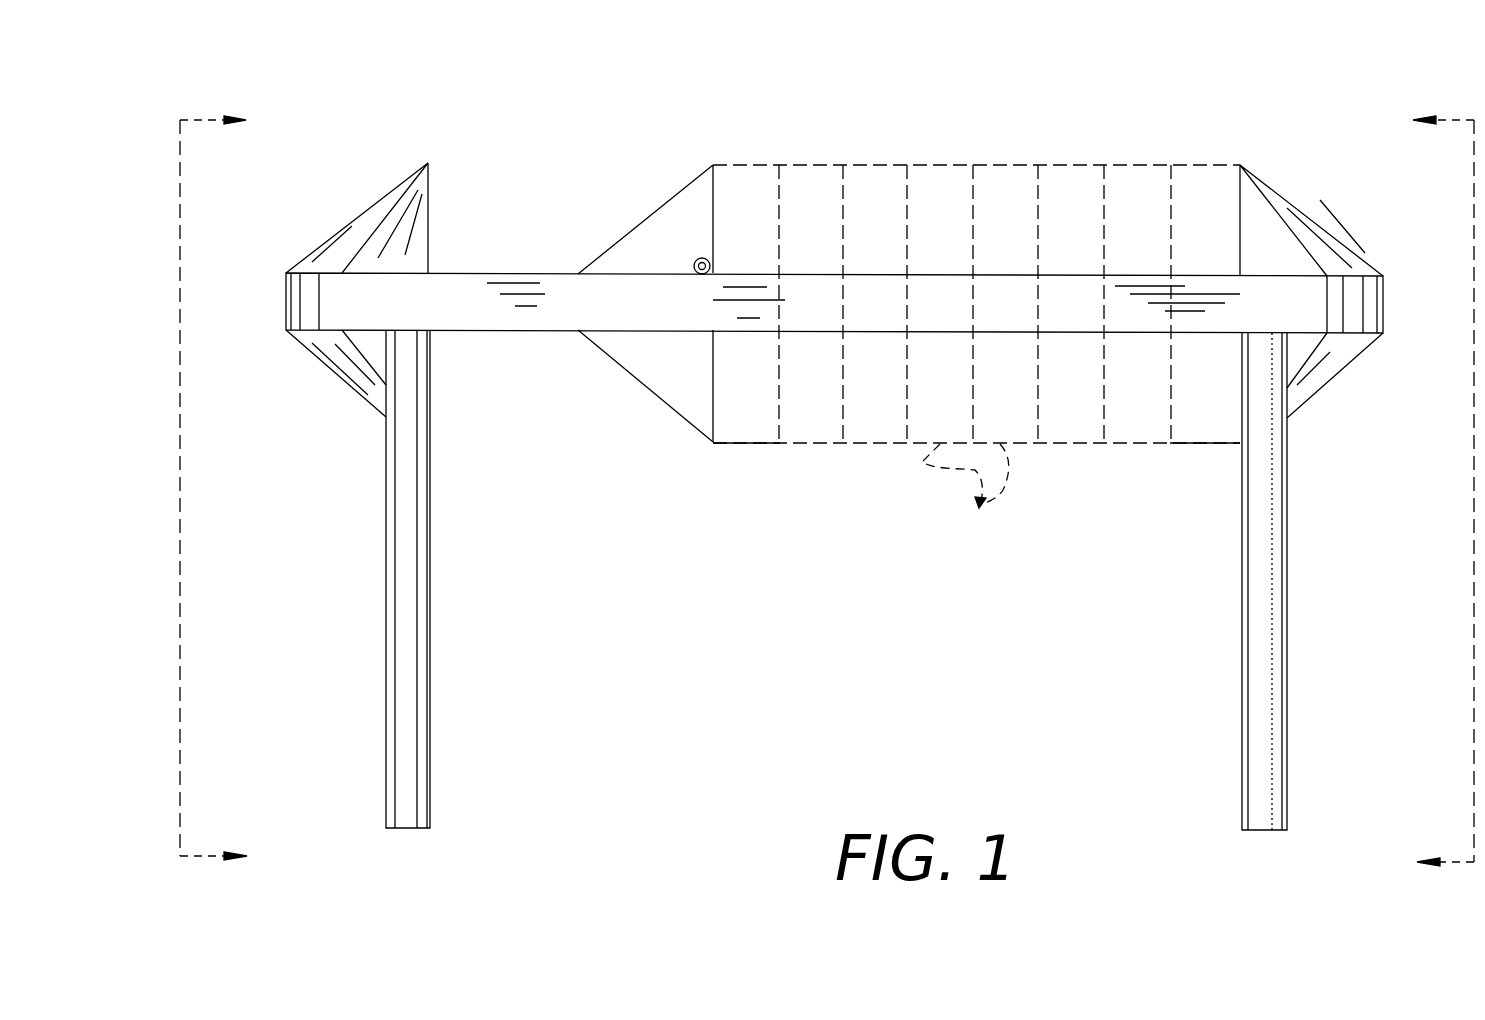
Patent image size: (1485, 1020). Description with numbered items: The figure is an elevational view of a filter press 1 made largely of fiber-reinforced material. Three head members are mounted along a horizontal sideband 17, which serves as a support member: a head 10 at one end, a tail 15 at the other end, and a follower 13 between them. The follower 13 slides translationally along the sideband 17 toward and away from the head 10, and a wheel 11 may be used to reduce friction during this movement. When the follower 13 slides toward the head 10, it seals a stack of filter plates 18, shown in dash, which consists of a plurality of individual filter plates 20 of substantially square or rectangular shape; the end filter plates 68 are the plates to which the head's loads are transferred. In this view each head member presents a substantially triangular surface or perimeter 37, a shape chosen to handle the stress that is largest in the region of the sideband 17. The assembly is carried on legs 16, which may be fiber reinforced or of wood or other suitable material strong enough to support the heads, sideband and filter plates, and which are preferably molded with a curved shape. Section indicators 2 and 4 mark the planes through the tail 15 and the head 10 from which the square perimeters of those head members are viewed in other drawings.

The filter press 1 is at (1285, 117).
The section line 2- 2 is at (231, 491).
The section line 4- 4 is at (1428, 491).
The head 10 is at (1305, 212).
The wheel 11 is at (693, 265).
The follower 13 is at (648, 242).
The tail 15 is at (372, 208).
The legs 16 is at (1240, 760).
The sideband 17 is at (483, 315).
The stack of filter plates 18 is at (752, 131).
The filter plates 20 is at (965, 495).
The substantially triangular surface or perimeter 37 is at (335, 373).
The end filter plates 68 is at (753, 445).